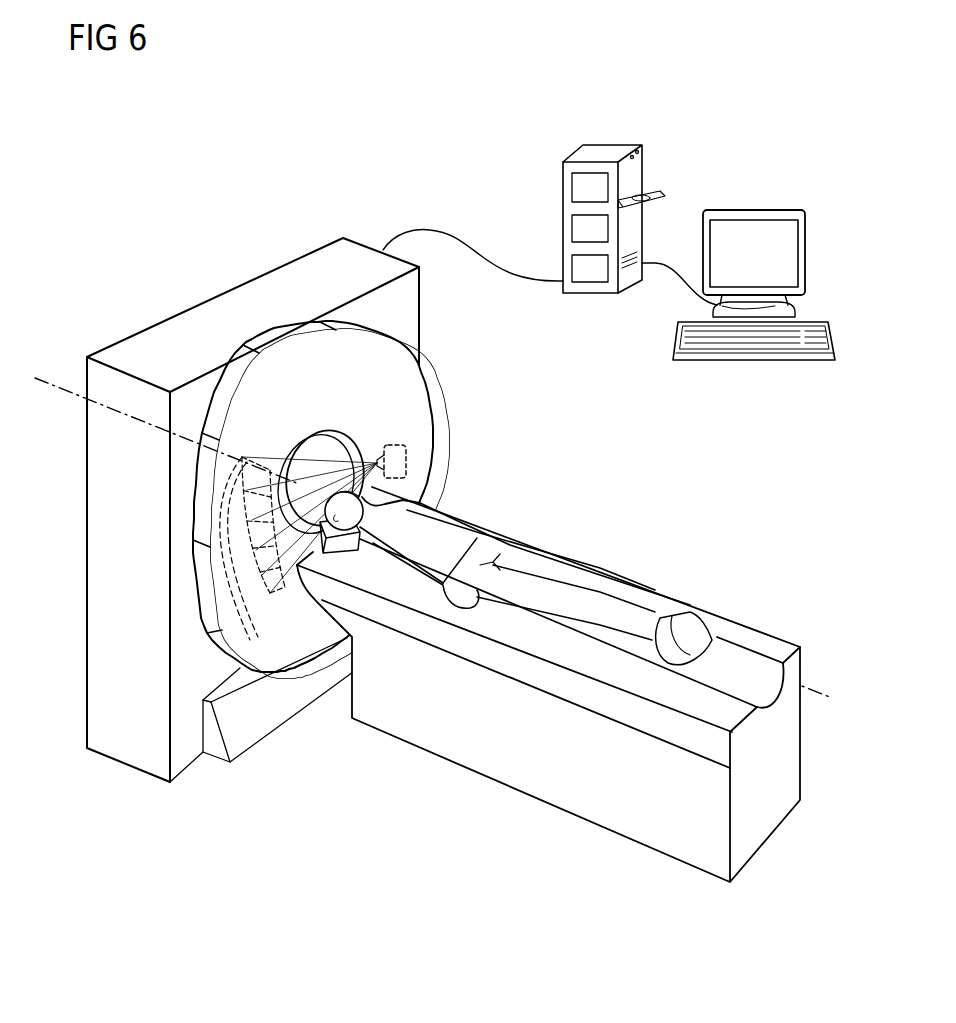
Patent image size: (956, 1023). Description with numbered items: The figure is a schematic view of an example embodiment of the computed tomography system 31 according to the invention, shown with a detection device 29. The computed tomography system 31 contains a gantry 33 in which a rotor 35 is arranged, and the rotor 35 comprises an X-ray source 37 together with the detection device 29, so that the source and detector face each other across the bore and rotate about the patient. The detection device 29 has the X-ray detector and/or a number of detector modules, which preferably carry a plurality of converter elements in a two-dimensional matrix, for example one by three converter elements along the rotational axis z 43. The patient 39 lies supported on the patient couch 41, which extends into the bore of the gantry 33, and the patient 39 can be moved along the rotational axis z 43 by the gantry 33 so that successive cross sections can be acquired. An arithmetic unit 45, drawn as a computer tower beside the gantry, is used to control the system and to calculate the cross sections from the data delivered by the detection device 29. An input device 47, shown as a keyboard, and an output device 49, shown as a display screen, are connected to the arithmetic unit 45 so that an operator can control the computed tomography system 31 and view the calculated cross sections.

The detection device 29 is at (260, 610).
The computed tomography system 31 is at (78, 672).
The gantry 33 is at (230, 272).
The rotor 35 is at (418, 390).
The X-ray source 37 is at (406, 460).
The patient 39 is at (548, 567).
The patient couch 41 is at (527, 780).
The rotational axis z 43 is at (38, 378).
The arithmetic unit 45 is at (607, 150).
The input device 47 is at (750, 353).
The output device 49 is at (757, 215).